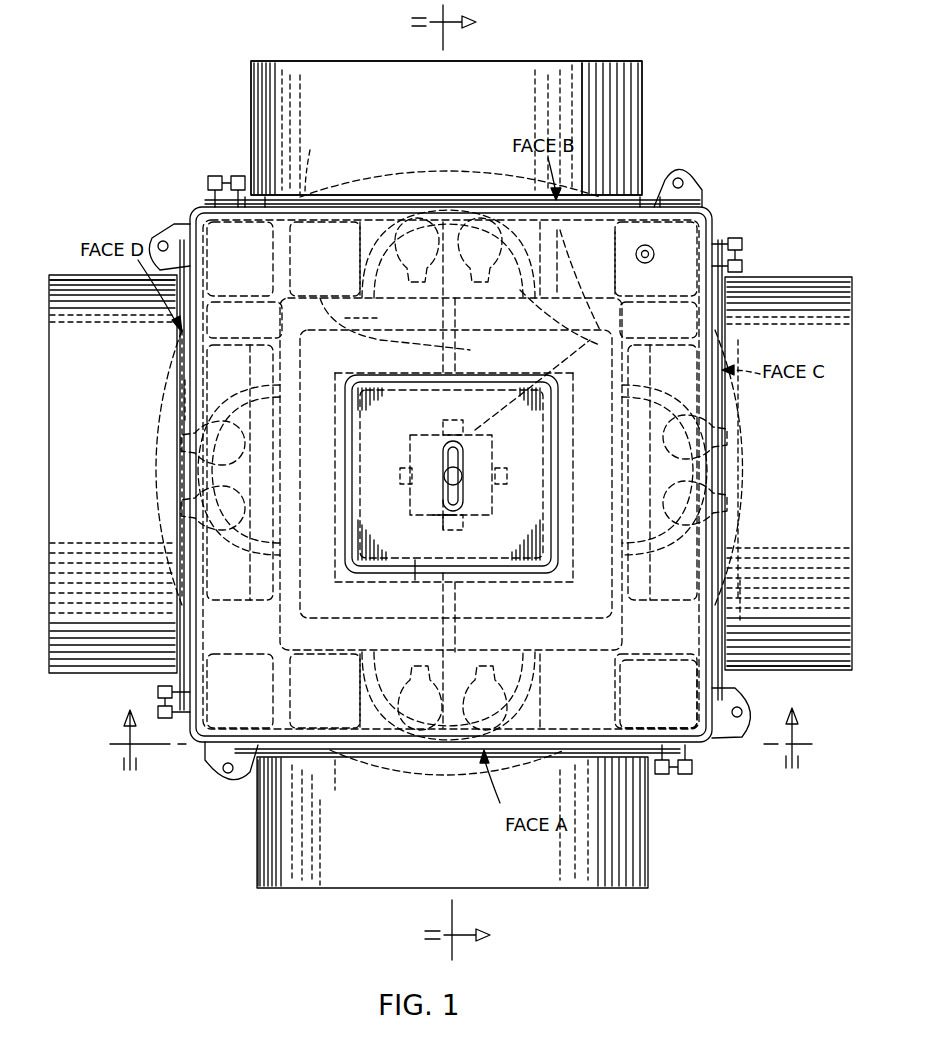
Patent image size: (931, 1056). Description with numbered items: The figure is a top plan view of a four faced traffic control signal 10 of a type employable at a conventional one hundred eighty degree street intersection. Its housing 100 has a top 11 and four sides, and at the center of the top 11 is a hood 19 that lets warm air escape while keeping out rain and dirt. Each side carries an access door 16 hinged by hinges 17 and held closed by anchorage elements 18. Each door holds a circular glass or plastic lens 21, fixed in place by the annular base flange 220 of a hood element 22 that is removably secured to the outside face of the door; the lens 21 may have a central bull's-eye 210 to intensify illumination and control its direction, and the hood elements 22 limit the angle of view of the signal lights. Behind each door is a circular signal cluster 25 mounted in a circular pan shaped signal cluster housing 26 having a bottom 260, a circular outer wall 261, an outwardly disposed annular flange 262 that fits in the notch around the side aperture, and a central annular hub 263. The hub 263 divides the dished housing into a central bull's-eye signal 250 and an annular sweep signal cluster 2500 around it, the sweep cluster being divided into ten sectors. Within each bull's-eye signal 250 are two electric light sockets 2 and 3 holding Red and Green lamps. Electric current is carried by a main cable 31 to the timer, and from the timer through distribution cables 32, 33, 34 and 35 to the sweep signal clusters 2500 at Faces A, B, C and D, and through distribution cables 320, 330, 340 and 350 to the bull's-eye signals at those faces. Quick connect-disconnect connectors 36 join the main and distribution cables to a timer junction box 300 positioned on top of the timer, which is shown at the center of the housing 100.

The electric light socket 2 is at (454, 729).
The electric light socket 3 is at (461, 482).
The traffic control signal 10 is at (636, 86).
The top 11 is at (374, 317).
The access door 16 is at (315, 193).
The hinge 17 is at (163, 240).
The anchorage element 18 is at (222, 176).
The hood 19 is at (415, 580).
The lens 21 is at (576, 193).
The hood element 22 is at (525, 73).
The signal cluster 25 is at (352, 204).
The signal cluster housing 26 is at (518, 303).
The main cable 31 is at (488, 414).
The distribution cable 32 is at (352, 348).
The distribution cable 33 is at (604, 346).
The distribution cable 34 is at (458, 523).
The distribution cable 35 is at (392, 474).
The connector 36 is at (440, 430).
The housing 100 is at (710, 222).
The bull's-eye 210 is at (422, 170).
The annular base flange 220 is at (620, 176).
The central bull's-eye signal 250 is at (454, 474).
The bottom 260 is at (620, 318).
The circular outer wall 261 is at (205, 303).
The annular flange 262 is at (206, 276).
The central annular hub 263 is at (350, 270).
The timer junction box 300 is at (488, 518).
The distribution cable 320 is at (454, 355).
The distribution cable 330 is at (573, 477).
The distribution cable 340 is at (454, 614).
The distribution cable 350 is at (327, 477).
The annular sweep signal cluster 2500 is at (345, 788).